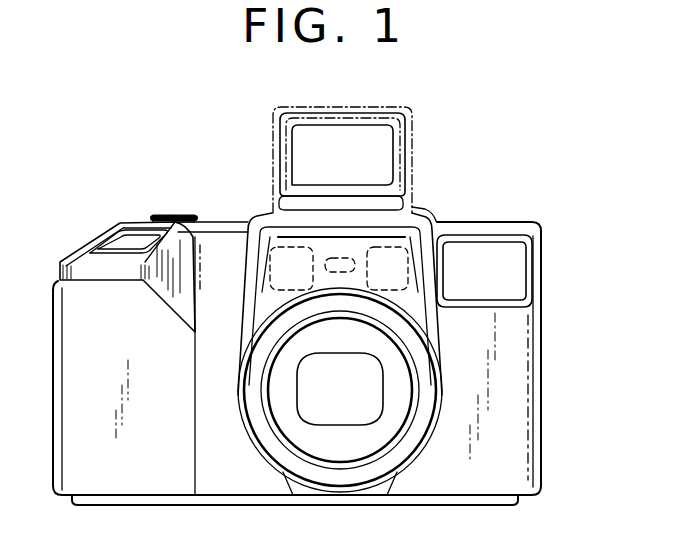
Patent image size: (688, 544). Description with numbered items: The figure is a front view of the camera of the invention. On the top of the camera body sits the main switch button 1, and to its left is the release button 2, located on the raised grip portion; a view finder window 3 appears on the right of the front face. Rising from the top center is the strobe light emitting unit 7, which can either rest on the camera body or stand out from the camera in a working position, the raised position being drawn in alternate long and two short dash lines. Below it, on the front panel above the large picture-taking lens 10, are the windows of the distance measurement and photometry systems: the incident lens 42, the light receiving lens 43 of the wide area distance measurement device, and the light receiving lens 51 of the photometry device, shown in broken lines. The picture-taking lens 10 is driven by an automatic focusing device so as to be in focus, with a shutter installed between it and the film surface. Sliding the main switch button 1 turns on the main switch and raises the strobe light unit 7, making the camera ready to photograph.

The main switch button 1 is at (176, 214).
The release button 2 is at (128, 240).
The view finder window 3 is at (493, 258).
The strobe light emitting unit 7 is at (365, 202).
The picture-taking lens 10 is at (392, 405).
The incident lens 42 is at (398, 252).
The light receiving lens 43 is at (295, 250).
The light receiving lens 51 is at (338, 257).